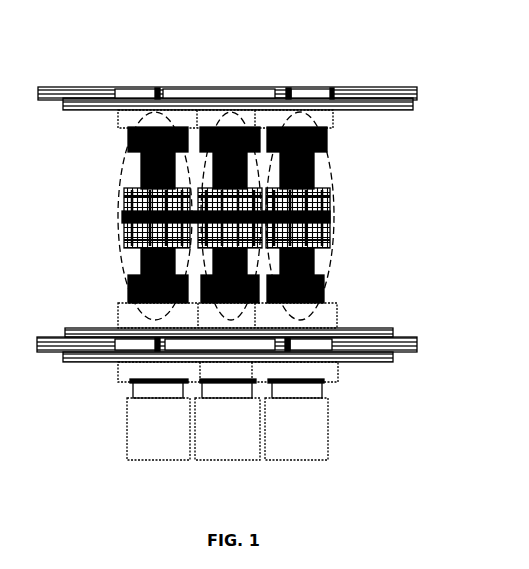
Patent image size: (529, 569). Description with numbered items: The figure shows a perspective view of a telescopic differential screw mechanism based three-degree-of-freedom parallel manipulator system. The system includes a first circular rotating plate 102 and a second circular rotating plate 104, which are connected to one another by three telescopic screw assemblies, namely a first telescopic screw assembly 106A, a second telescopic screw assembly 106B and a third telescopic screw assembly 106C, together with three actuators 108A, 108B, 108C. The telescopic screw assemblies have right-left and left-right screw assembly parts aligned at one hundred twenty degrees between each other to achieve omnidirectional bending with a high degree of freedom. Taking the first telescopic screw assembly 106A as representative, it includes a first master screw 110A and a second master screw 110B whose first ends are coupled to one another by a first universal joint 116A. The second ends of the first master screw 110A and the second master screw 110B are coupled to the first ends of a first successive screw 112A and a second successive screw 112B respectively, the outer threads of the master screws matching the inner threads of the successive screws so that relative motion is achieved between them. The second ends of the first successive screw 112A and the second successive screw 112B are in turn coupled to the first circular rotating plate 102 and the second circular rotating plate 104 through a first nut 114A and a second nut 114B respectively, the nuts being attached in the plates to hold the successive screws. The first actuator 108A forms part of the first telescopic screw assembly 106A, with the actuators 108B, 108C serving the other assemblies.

The first circular rotating plate 102 is at (417, 345).
The second circular rotating plate 104 is at (417, 93).
The first telescopic screw assembly 106A is at (290, 113).
The second telescopic screw assembly 106B is at (228, 113).
The third telescopic screw assembly 106C is at (152, 113).
The first actuator 108A is at (328, 423).
The second actuator 108B is at (240, 460).
The third actuator 108C is at (127, 436).
The first master screw 110A is at (328, 254).
The second master screw 110B is at (328, 172).
The first successive screw 112A is at (330, 288).
The second successive screw 112B is at (330, 138).
The first nut 114A is at (338, 318).
The second nut 114B is at (333, 122).
The first universal joint 116A is at (330, 218).